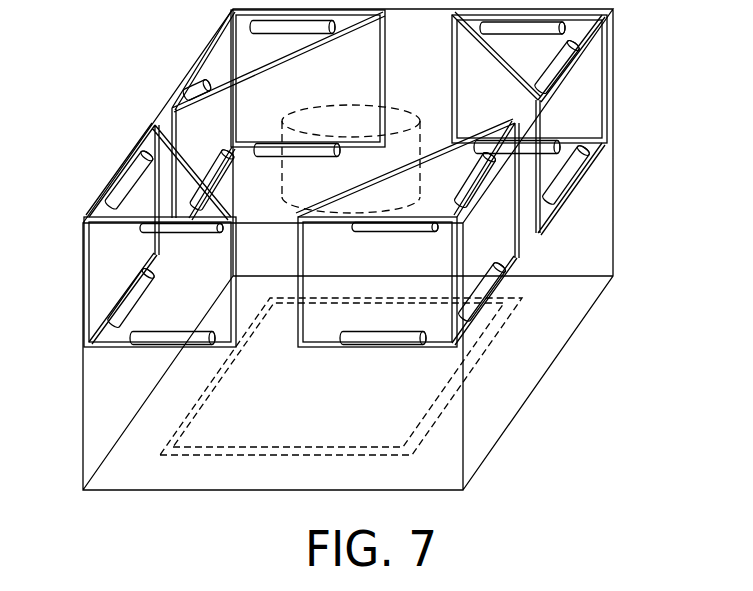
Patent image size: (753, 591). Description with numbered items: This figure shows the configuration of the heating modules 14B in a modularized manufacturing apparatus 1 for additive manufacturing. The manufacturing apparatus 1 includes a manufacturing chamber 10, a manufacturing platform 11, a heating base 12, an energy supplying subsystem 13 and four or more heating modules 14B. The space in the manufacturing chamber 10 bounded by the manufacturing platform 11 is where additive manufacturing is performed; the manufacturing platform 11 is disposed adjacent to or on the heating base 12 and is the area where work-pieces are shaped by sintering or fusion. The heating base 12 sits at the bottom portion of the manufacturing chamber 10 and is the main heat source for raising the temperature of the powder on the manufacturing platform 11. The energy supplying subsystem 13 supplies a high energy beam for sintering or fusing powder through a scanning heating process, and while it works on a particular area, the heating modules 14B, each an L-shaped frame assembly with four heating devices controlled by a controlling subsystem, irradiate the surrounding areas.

The manufacturing apparatus 1 is at (77, 49).
The manufacturing chamber 10 is at (614, 190).
The manufacturing platform 11 is at (484, 336).
The heating base 12 is at (507, 318).
The energy supplying subsystem 13 is at (278, 122).
The heating module 14B is at (257, 56).